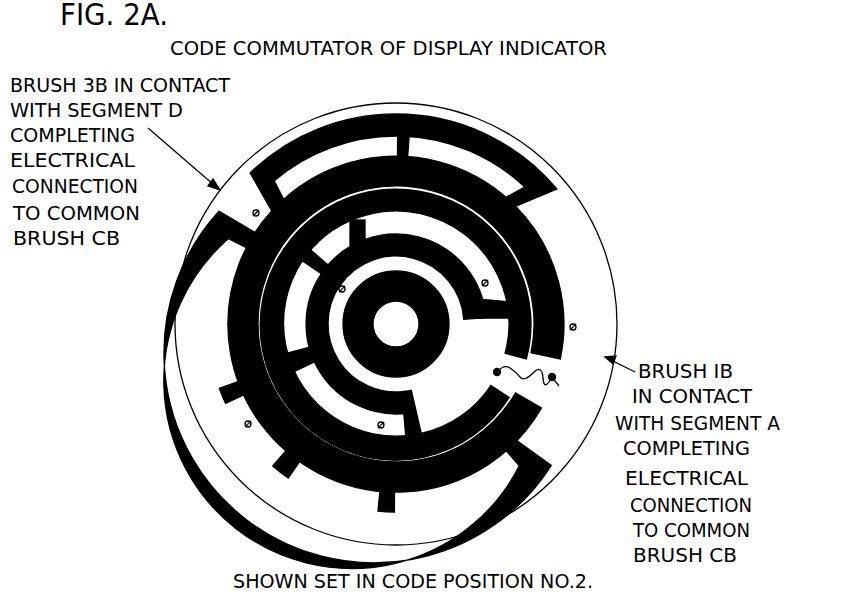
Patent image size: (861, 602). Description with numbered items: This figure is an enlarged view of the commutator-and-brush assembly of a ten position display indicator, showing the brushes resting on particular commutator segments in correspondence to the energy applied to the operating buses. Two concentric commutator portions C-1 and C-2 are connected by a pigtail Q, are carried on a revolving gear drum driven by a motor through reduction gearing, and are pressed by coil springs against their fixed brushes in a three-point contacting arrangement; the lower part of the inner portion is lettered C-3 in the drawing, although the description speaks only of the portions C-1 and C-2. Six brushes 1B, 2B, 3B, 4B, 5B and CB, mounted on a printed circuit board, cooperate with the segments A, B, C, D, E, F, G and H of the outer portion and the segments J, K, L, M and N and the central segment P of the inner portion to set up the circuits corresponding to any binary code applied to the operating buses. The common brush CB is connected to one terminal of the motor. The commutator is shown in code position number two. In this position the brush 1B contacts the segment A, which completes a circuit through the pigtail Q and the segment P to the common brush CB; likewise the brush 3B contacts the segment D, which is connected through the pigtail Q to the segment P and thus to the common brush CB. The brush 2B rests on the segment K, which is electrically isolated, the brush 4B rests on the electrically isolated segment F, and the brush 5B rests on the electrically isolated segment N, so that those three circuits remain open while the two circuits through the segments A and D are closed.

The commutator portion C-1 is at (517, 151).
The commutator portion C-2 is at (407, 274).
The inner commutator ring lower portion C-3 is at (384, 355).
The segment P is at (396, 316).
The brush 1B is at (579, 319).
The brush 2B is at (485, 286).
The brush 3B is at (253, 212).
The brush 4B is at (245, 425).
The brush 5B is at (384, 424).
The common brush CB is at (339, 288).
The segment A is at (575, 255).
The segment B is at (459, 160).
The segment C is at (333, 160).
The segment D is at (245, 193).
The segment E is at (217, 320).
The segment F is at (258, 440).
The segment G is at (335, 493).
The segment H is at (459, 493).
The segment J is at (511, 375).
The segment K is at (468, 255).
The segment L is at (347, 241).
The segment M is at (293, 321).
The segment N is at (339, 411).
The pigtail Q is at (560, 385).